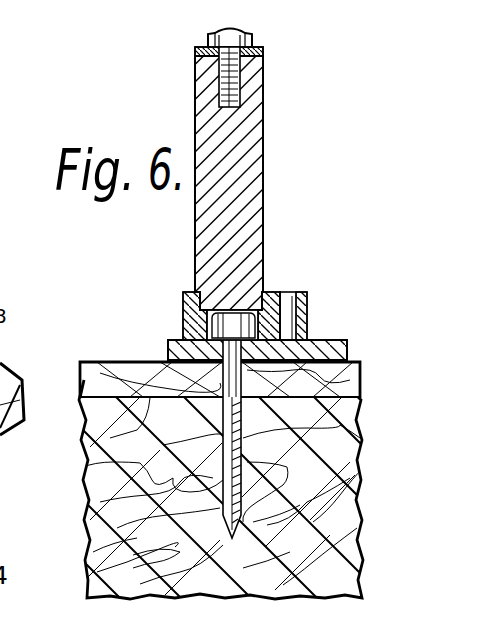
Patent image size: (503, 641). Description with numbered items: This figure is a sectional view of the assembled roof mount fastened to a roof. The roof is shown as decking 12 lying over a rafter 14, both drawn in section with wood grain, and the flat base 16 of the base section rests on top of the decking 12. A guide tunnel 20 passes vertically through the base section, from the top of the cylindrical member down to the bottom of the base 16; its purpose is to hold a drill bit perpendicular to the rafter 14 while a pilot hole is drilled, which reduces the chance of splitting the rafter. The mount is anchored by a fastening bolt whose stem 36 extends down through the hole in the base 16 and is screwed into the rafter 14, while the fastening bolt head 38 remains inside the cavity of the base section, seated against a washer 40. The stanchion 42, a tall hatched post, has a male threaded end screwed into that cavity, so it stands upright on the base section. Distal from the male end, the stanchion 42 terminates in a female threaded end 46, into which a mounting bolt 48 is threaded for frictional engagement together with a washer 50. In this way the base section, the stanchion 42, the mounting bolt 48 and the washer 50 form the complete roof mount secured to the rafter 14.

The decking 12 is at (105, 362).
The rafter 14 is at (88, 527).
The base 16 is at (326, 340).
The guide tunnel 20 is at (290, 293).
The stem 36 is at (100, 471).
The fastening bolt head 38 is at (184, 312).
The washer 40 is at (184, 330).
The stanchion 42 is at (265, 210).
The female threaded end 46 is at (241, 82).
The mounting bolt 48 is at (210, 34).
The washer 50 is at (195, 56).